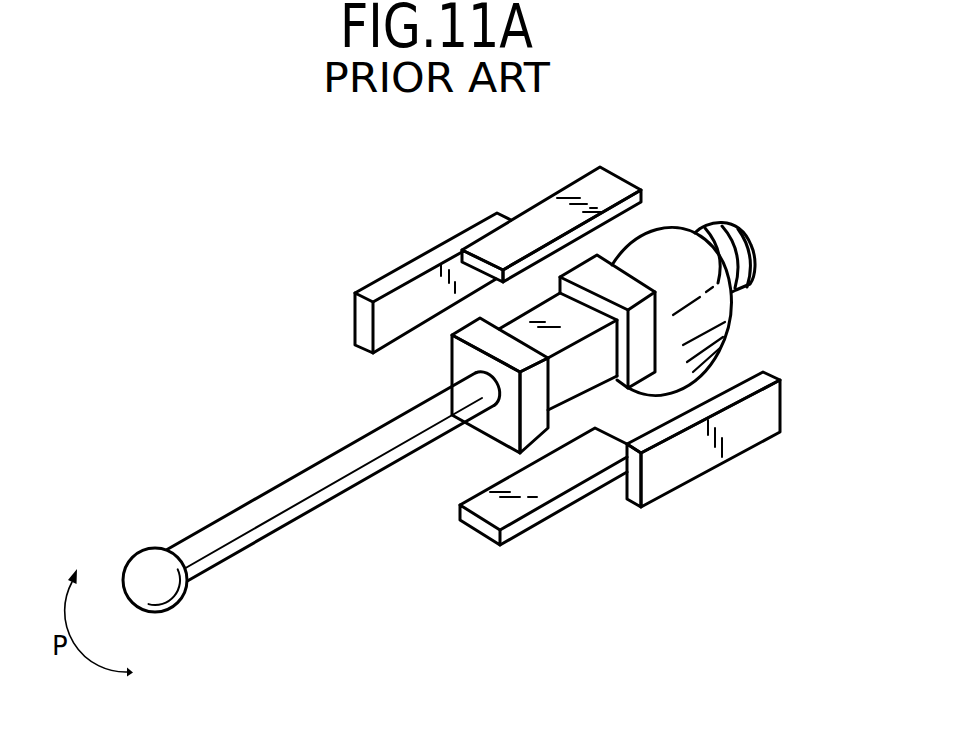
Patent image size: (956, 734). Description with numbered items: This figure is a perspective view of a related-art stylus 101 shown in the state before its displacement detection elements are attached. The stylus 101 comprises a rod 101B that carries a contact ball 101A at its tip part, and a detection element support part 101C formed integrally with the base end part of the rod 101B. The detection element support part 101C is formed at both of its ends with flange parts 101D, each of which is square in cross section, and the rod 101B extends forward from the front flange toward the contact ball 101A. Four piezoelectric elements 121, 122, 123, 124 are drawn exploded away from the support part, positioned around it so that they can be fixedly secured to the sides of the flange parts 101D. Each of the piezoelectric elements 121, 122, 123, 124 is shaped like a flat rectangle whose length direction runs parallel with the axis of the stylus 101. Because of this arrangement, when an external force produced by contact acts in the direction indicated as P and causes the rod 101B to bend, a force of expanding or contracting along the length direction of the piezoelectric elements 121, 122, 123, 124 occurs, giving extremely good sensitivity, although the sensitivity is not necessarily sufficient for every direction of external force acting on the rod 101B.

The stylus 101 is at (272, 455).
The contact ball 101A is at (150, 558).
The rod 101B is at (308, 502).
The detection element support part 101C is at (452, 358).
The flange parts 101D is at (617, 283).
The piezoelectric element 121 is at (607, 182).
The piezoelectric element 122 is at (765, 407).
The piezoelectric element 123 is at (562, 482).
The piezoelectric element 124 is at (382, 290).